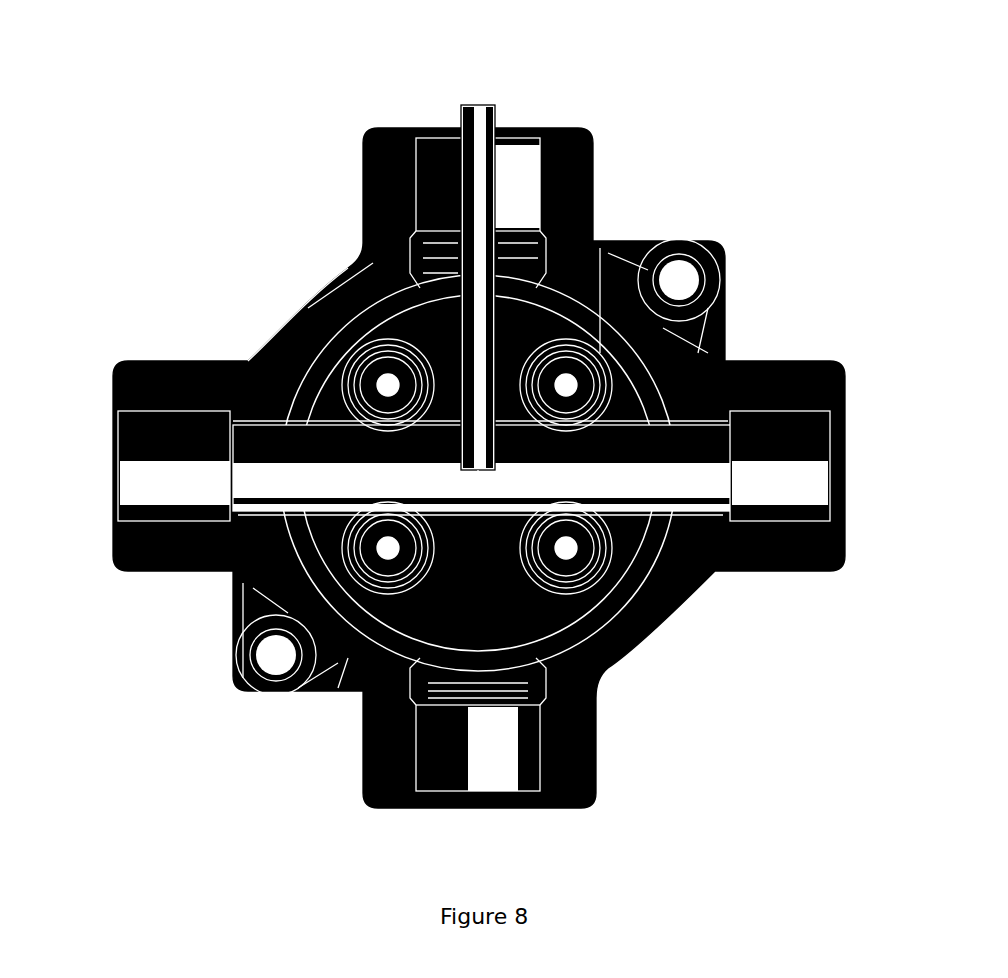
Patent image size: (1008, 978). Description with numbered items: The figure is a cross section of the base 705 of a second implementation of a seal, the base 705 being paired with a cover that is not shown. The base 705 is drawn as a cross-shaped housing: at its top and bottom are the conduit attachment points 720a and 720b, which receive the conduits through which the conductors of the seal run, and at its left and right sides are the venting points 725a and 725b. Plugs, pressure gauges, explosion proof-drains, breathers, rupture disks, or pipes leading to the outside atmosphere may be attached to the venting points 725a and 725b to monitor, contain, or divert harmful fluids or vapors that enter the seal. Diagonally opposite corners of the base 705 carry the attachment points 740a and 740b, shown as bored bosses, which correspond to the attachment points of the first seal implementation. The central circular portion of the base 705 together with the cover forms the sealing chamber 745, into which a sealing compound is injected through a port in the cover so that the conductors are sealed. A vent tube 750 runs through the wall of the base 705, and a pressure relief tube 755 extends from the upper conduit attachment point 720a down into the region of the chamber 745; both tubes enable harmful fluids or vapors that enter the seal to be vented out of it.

The base 705 is at (488, 49).
The conduit attachment point 720a is at (518, 136).
The conduit attachment point 720b is at (468, 801).
The venting point 725a is at (108, 462).
The venting point 725b is at (838, 462).
The attachment point 740a is at (672, 272).
The attachment point 740b is at (268, 647).
The sealing chamber 745 is at (520, 598).
The vent tube 750 is at (283, 410).
The pressure relief tube 755 is at (453, 107).